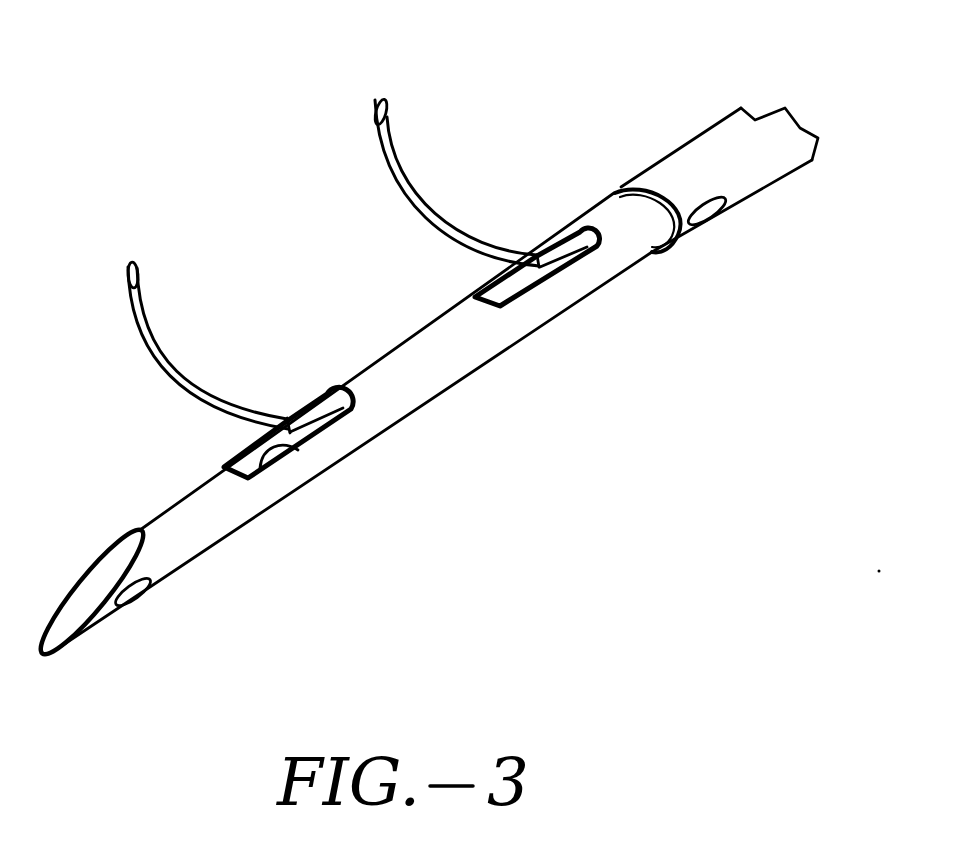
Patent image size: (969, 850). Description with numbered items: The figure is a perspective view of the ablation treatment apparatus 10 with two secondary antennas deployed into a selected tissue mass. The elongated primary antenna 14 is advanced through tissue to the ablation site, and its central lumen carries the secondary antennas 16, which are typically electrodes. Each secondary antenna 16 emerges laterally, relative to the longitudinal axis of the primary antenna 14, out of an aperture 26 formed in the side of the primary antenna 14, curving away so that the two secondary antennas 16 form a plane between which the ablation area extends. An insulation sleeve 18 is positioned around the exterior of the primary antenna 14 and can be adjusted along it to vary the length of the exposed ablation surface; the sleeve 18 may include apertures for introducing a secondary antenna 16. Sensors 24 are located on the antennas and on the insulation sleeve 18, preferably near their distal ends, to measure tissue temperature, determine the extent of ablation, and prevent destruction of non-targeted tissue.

The ablation treatment apparatus 10 is at (620, 558).
The primary antenna 14 is at (232, 520).
The secondary antenna 16 is at (181, 377).
The insulation sleeve 18 is at (307, 420).
The sensor 24 is at (138, 598).
The aperture 26 is at (302, 450).